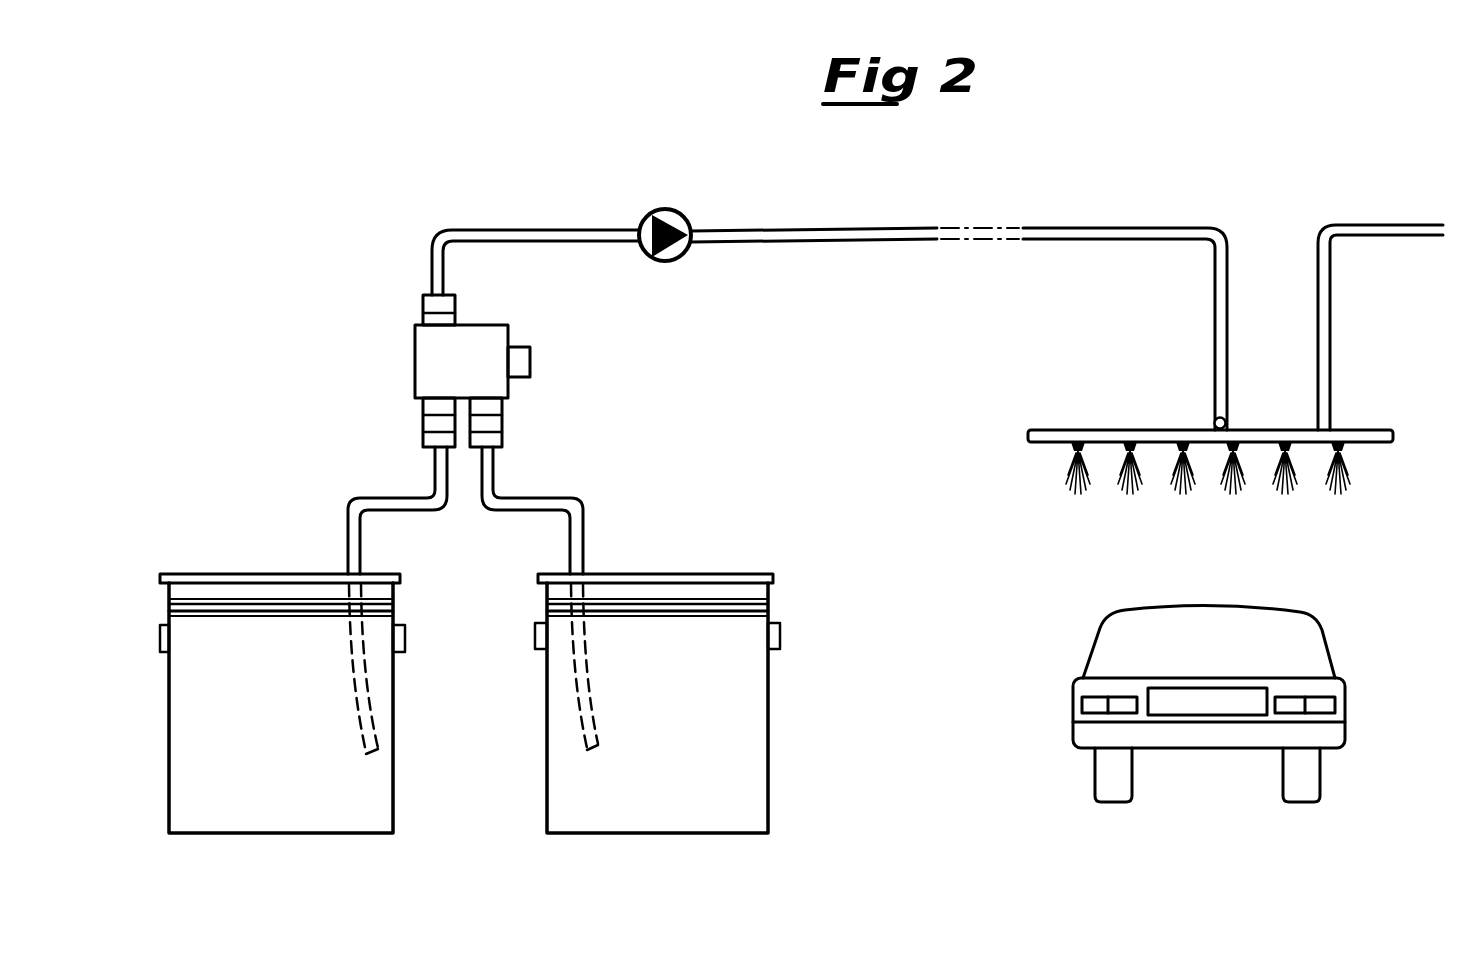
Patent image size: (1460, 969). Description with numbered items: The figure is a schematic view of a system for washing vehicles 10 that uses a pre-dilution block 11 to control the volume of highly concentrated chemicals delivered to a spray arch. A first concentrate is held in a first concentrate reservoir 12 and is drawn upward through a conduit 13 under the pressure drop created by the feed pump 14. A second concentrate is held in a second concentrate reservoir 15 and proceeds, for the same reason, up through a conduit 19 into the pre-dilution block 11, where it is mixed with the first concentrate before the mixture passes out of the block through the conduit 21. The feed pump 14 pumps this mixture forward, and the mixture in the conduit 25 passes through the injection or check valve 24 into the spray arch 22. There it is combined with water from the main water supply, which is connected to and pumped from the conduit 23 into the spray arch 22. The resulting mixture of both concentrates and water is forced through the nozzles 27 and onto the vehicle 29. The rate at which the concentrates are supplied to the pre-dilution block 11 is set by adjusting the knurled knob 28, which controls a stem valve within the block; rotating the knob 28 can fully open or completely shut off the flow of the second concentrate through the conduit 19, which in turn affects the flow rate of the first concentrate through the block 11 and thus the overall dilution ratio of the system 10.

The system for washing vehicles 10 is at (376, 191).
The pre-dilution block 11 is at (406, 360).
The first concentrate reservoir 12 is at (312, 834).
The conduit 13 is at (392, 497).
The feed pump 14 is at (681, 213).
The second concentrate reservoir 15 is at (692, 833).
The conduit 19 is at (553, 497).
The conduit 21 is at (490, 229).
The spray arch 22 is at (1063, 430).
The conduit 23 is at (1374, 224).
The injection or check valve 24 is at (1226, 417).
The conduit 25 is at (866, 228).
The nozzles 27 is at (1117, 505).
The knurled knob 28 is at (523, 347).
The vehicle 29 is at (1255, 605).